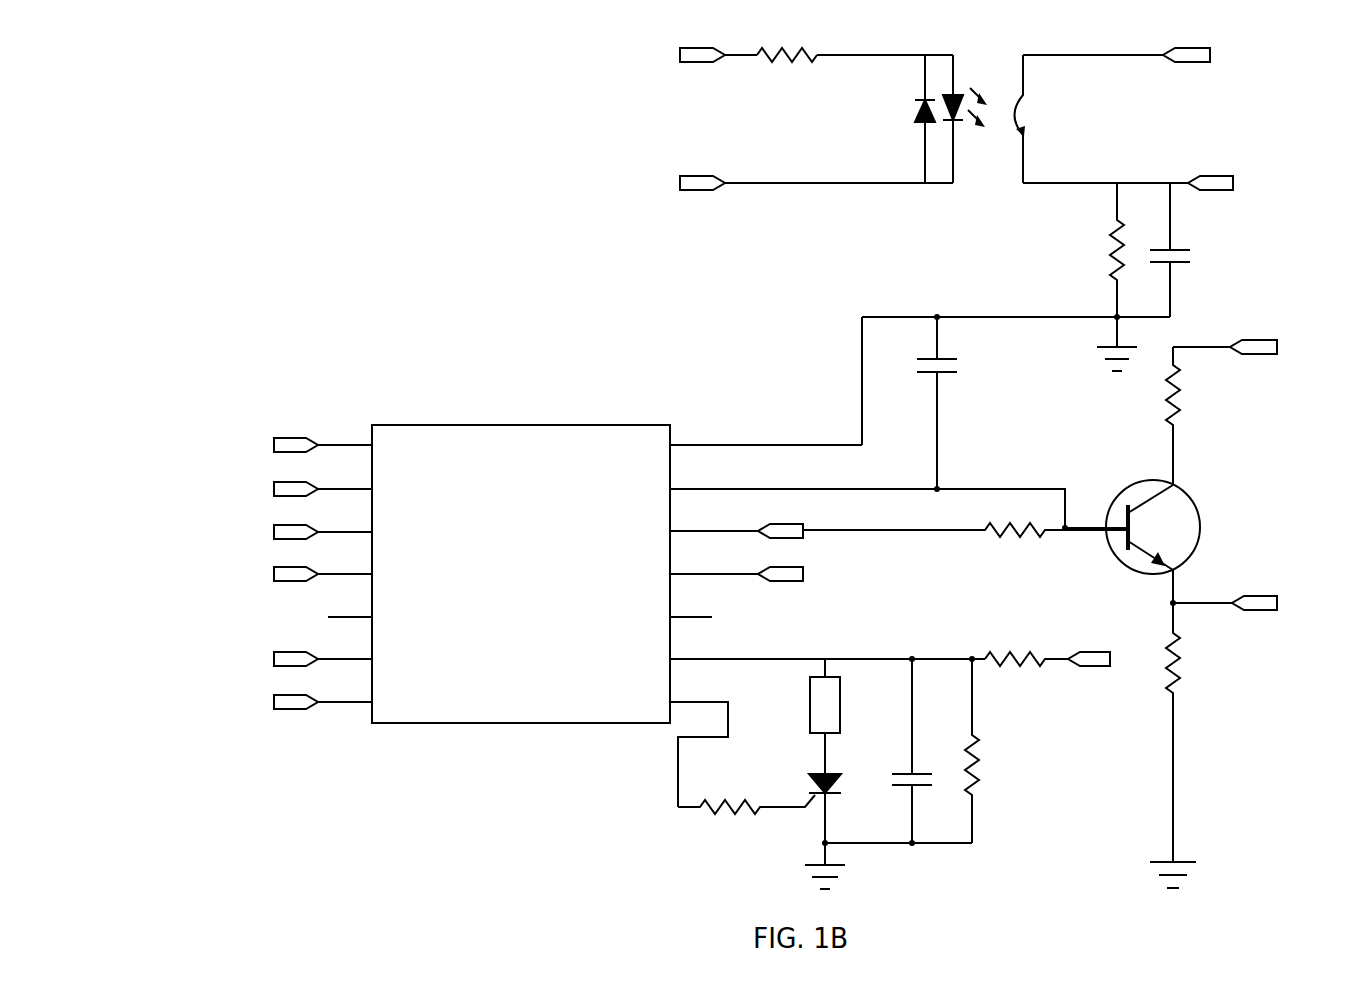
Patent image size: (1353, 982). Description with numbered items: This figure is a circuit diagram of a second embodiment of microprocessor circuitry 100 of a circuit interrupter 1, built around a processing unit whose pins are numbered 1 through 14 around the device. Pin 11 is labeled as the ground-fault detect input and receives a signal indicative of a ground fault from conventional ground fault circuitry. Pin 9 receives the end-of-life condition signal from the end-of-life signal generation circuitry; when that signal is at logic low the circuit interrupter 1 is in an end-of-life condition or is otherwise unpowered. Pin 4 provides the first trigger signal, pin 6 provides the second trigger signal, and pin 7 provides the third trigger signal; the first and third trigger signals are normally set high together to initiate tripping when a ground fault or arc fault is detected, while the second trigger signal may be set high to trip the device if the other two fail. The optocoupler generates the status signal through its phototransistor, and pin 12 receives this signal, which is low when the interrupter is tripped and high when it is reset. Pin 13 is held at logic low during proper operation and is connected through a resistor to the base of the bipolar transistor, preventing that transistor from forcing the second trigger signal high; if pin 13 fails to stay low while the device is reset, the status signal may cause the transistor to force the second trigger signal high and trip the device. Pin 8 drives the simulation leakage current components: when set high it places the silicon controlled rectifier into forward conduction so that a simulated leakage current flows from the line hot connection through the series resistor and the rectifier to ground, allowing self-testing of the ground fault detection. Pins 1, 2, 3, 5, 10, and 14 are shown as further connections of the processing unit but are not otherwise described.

The microprocessor circuitry 100 is at (487, 218).
The circuit interrupter 1 is at (323, 439).
The U1 pin 2 is at (323, 483).
The U1 pin 3 is at (323, 526).
The pin 4 of U1 4 is at (323, 568).
The U1 pin 5 is at (350, 608).
The pin 6 of U1 6 is at (323, 653).
The pin 7 of U1 7 is at (323, 696).
The pin 8 of U1 8 is at (699, 745).
The pin 9 of U1 9 is at (827, 650).
The U1 pin 10 is at (691, 608).
The pin 11 of U1 11 is at (736, 568).
The pin 12 of U1 12 is at (736, 526).
The pin 13 of U1 13 is at (869, 501).
The U1 pin 14 is at (766, 436).